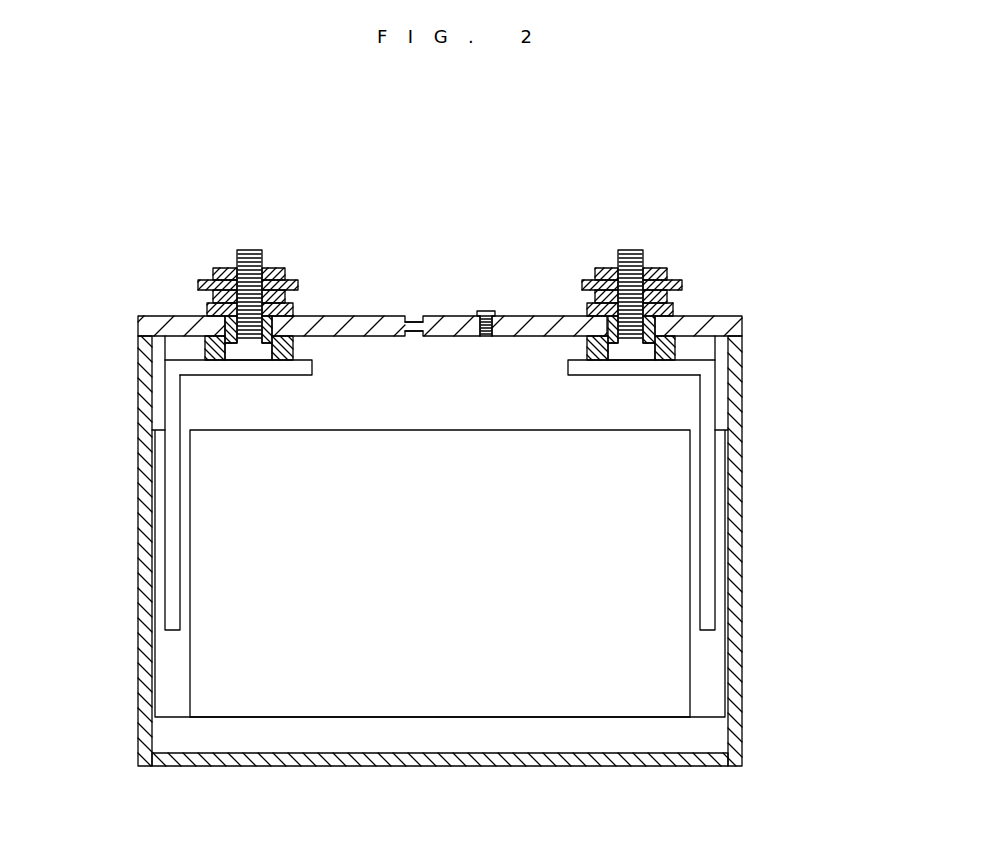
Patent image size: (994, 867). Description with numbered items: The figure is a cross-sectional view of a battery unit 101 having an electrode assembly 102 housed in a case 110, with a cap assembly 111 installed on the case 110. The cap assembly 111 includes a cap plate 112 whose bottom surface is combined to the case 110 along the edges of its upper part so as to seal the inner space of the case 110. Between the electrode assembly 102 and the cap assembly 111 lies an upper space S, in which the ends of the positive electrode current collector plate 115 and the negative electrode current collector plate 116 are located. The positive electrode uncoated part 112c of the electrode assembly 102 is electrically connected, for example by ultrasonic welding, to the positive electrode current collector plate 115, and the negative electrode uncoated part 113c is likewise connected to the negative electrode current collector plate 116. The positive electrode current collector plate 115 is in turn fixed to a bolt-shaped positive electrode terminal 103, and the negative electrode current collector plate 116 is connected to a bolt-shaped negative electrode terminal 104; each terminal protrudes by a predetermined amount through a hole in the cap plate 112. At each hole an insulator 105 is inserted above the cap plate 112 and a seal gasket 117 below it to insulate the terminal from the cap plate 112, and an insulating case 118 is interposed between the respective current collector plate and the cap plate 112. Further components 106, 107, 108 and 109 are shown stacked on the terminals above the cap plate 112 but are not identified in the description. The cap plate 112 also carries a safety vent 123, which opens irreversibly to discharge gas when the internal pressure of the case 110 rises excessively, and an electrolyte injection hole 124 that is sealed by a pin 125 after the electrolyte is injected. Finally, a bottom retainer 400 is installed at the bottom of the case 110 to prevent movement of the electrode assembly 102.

The battery unit 101 is at (714, 155).
The electrode assembly 102 is at (457, 542).
The positive electrode terminal 103 is at (249, 250).
The negative electrode terminal 104 is at (630, 252).
The insulator 105 is at (224, 320).
The insulating ring 106 is at (207, 310).
The lower nut 107 is at (213, 297).
The washer plate 108 is at (198, 285).
The upper nut 109 is at (213, 272).
The case 110 is at (743, 462).
The cap assembly 111 is at (758, 327).
The cap plate 112 is at (540, 316).
The positive electrode uncoated part 112c is at (173, 658).
The negative electrode uncoated part 113c is at (708, 658).
The positive electrode current collector plate 115 is at (176, 512).
The negative electrode current collector plate 116 is at (705, 512).
The seal gasket 117 is at (205, 340).
The insulating case 118 is at (208, 354).
The safety vent 123 is at (415, 321).
The electrolyte injection hole 124 is at (490, 343).
The pin 125 is at (484, 311).
The bottom retainer 400 is at (418, 740).
The upper space S is at (448, 384).